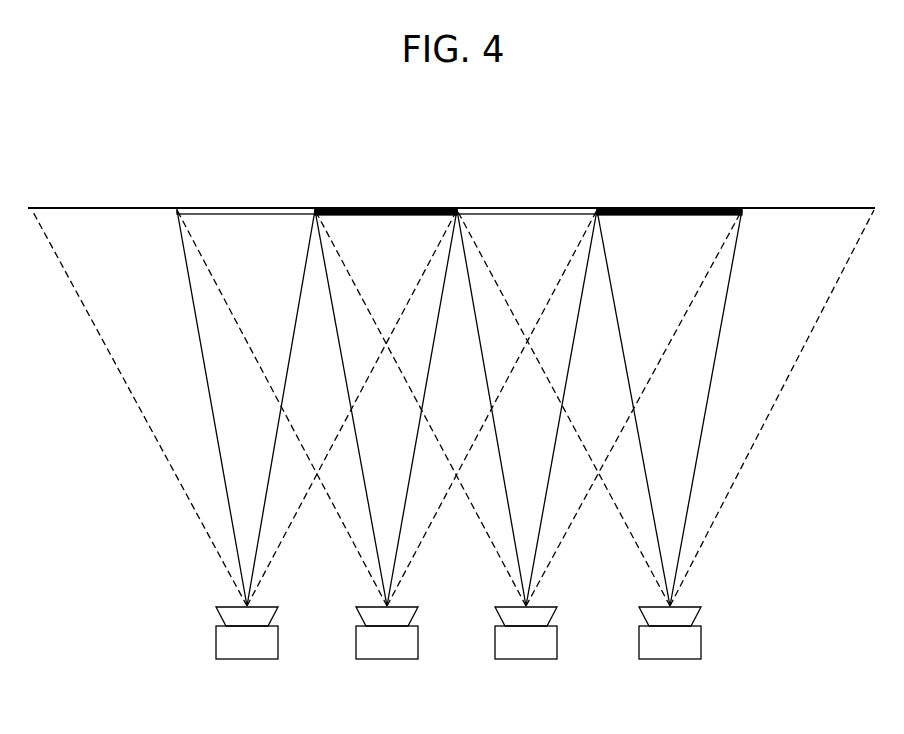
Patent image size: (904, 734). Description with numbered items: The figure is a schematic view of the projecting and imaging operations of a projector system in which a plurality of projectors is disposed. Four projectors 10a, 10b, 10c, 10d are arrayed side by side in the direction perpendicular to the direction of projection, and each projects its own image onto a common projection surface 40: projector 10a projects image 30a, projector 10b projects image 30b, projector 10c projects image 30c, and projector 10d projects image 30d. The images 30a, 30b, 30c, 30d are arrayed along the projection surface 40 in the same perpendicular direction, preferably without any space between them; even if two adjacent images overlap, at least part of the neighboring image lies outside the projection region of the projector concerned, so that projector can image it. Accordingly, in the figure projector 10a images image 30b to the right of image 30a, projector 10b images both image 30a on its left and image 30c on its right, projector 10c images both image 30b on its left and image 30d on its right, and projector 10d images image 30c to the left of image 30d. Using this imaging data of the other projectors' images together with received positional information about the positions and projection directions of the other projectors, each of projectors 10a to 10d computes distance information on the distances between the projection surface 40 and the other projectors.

The projection surface 40 is at (135, 207).
The image 30a is at (239, 207).
The image 30b is at (378, 207).
The image 30c is at (519, 207).
The image 30d is at (659, 207).
The projector 10a is at (247, 660).
The projector 10b is at (387, 660).
The projector 10c is at (526, 660).
The projector 10d is at (670, 660).